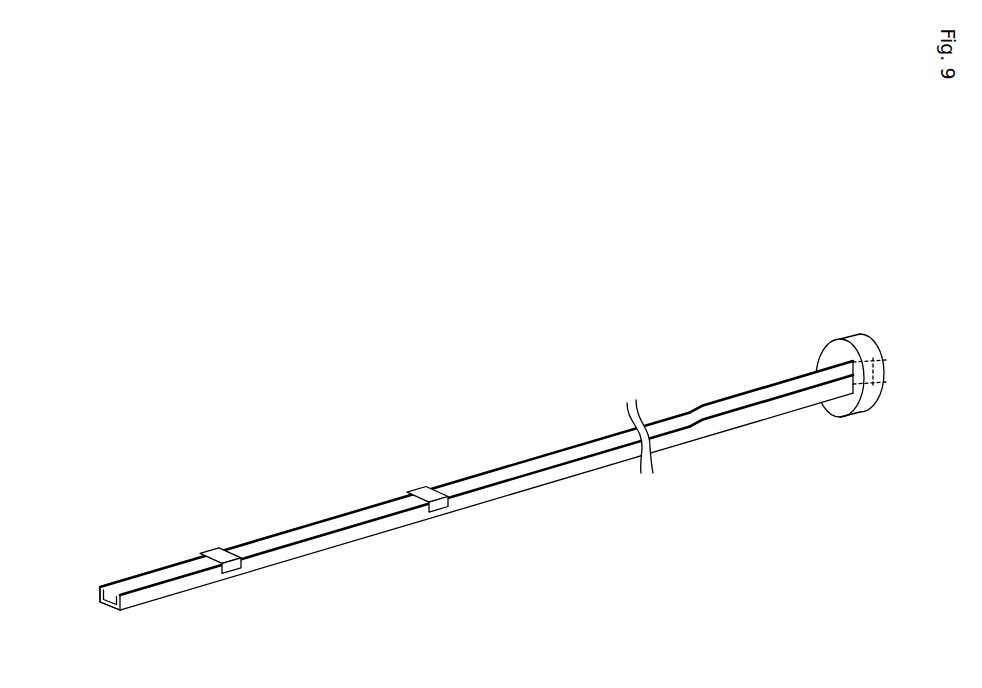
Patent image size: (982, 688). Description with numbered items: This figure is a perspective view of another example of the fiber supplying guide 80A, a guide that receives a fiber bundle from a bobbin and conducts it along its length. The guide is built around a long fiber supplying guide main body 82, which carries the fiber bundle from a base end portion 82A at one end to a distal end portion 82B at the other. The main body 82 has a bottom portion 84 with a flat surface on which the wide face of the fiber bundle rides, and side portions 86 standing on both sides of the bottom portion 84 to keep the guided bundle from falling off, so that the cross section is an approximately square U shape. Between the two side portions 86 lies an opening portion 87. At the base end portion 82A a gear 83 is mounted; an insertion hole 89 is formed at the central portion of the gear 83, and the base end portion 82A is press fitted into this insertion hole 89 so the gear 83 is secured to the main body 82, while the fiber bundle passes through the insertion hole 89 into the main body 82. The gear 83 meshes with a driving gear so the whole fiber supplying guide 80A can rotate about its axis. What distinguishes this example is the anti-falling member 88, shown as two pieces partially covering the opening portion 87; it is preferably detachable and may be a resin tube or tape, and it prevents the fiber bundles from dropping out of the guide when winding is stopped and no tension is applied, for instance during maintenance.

The fiber supplying guide 80A is at (508, 363).
The fiber supplying guide main body 82 is at (558, 422).
The base end portion 82A is at (778, 360).
The distal end portion 82B is at (172, 528).
The gear 83 is at (843, 336).
The bottom portion 84 is at (330, 553).
The side portions 86 is at (338, 530).
The opening portion 87 is at (495, 472).
The anti-falling member 88 is at (230, 572).
The insertion hole 89 is at (883, 358).